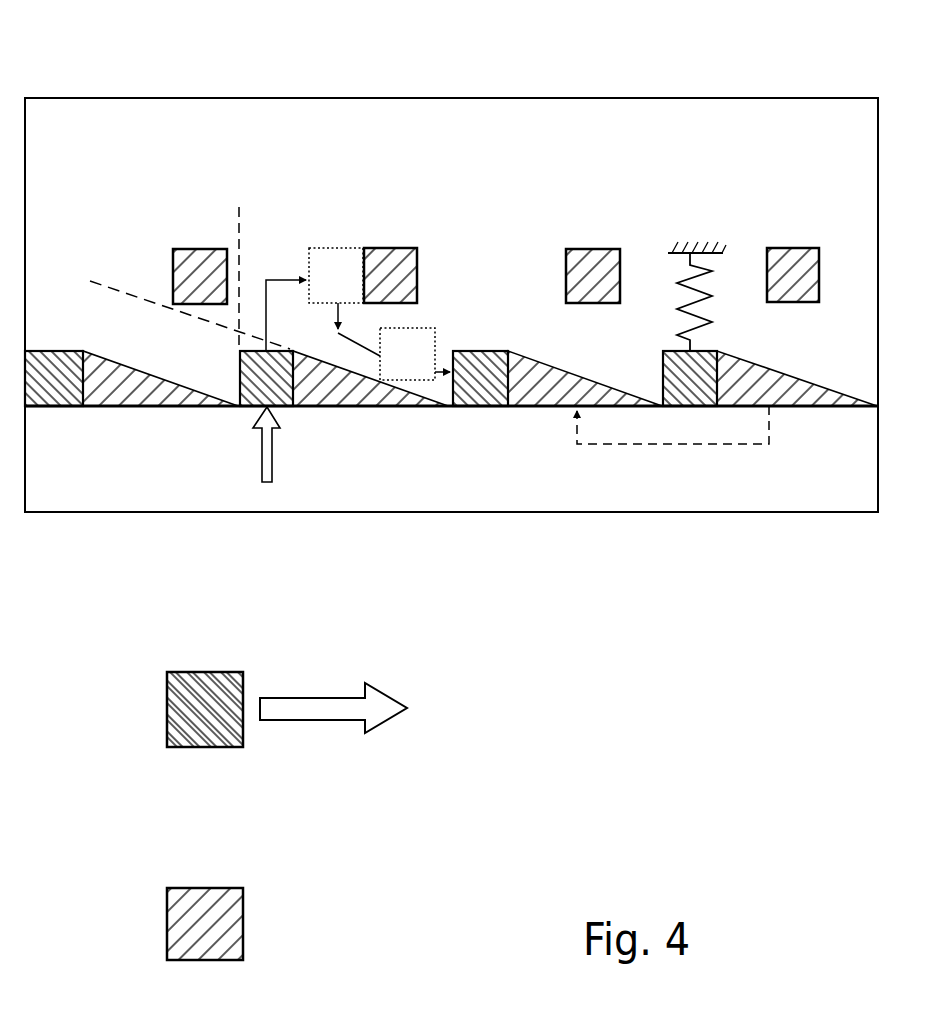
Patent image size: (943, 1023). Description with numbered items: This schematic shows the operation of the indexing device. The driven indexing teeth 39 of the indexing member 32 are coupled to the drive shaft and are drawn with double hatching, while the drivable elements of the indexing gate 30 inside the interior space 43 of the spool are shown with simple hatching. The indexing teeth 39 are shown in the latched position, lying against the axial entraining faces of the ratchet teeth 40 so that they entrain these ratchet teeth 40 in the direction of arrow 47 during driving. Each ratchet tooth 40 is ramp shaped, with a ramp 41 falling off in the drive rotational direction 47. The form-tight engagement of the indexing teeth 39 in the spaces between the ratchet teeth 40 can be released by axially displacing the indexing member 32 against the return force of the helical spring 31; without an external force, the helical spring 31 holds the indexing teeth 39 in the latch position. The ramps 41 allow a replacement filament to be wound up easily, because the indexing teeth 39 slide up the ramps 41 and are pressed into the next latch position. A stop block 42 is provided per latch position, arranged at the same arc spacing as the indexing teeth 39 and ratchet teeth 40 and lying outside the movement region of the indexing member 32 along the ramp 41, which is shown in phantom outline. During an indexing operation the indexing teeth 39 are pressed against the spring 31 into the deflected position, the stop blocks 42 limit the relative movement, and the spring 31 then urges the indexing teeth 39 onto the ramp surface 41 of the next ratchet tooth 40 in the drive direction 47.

The interior space 43 is at (128, 112).
The ratchet teeth 40 is at (327, 383).
The indexing teeth 39 is at (487, 392).
The ramp 41 is at (567, 369).
The stop block 42 is at (590, 263).
The helical spring 31 is at (712, 303).
The indexing member 32 is at (194, 681).
The arrow 47 is at (294, 705).
The indexing gate 30 is at (193, 898).